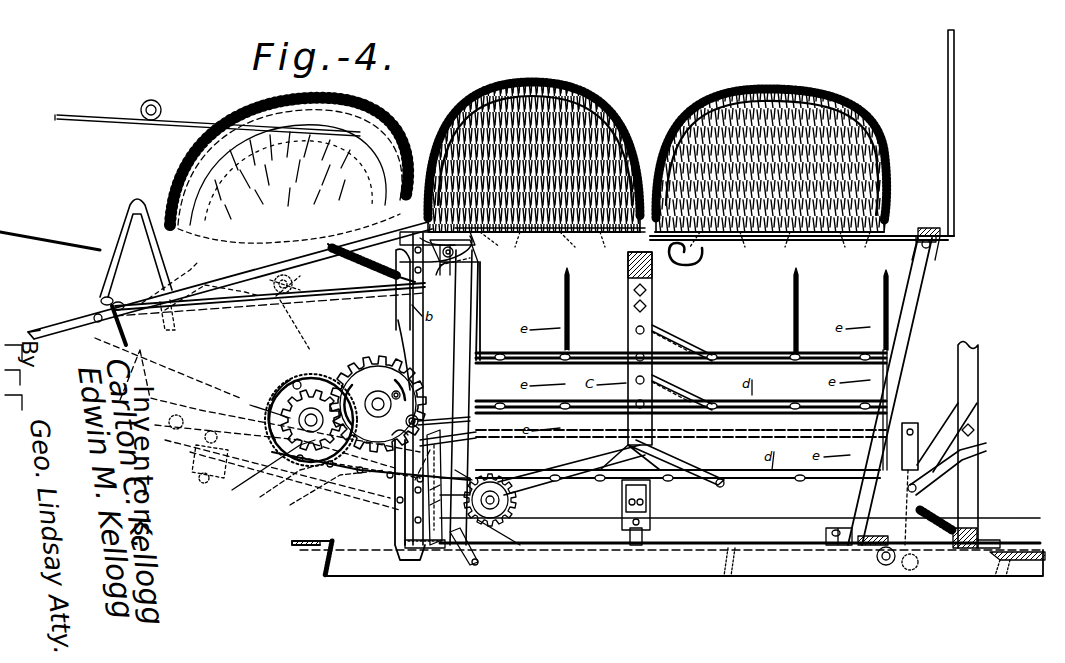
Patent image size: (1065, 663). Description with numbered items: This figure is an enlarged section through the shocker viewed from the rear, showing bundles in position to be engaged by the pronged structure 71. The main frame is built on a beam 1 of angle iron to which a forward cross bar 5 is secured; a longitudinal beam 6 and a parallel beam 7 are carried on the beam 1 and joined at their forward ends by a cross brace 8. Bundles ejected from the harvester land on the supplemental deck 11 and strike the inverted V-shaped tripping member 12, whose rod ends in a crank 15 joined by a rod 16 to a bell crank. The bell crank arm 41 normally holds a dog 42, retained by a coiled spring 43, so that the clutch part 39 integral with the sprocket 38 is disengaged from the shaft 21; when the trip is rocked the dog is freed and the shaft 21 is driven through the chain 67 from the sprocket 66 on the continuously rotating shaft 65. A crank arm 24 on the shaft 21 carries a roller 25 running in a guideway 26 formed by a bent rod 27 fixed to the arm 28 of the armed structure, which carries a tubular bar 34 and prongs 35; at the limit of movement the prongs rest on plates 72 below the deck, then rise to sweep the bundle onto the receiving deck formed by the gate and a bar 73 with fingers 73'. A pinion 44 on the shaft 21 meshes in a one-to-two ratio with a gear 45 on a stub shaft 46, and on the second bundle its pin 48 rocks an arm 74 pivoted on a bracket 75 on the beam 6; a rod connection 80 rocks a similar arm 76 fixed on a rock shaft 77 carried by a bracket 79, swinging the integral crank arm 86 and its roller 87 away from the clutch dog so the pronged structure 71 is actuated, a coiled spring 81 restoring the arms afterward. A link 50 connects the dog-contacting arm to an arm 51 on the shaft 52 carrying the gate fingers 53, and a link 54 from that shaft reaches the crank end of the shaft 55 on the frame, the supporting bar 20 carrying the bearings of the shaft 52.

The beam 1 is at (622, 568).
The forward cross bar 5 is at (986, 576).
The longitudinal beam 6 is at (395, 545).
The beam 7 is at (845, 548).
The cross brace 8 is at (730, 528).
The supplemental deck 11 is at (55, 328).
The tripping member 12 is at (125, 200).
The crank 15 is at (98, 300).
The rod 16 is at (222, 306).
The bar 20 is at (470, 242).
The shaft 21 is at (280, 413).
The crank arm 24 is at (260, 497).
The roller 25 is at (290, 505).
The guideway 26 is at (213, 461).
The rod 27 is at (200, 485).
The arm 28 is at (285, 322).
The tubular bar 34 is at (395, 283).
The prongs 35 is at (420, 230).
The sprocket 38 is at (280, 395).
The clutch part 39 is at (282, 422).
The arm 41 is at (345, 375).
The dog 42 is at (297, 380).
The coiled spring 43 is at (372, 262).
The pinion 44 is at (270, 432).
The gear 45 is at (360, 372).
The stub shaft 46 is at (420, 395).
The pin 48 is at (530, 426).
The link 50 is at (478, 300).
The arm 51 is at (470, 255).
The shaft 52 is at (445, 265).
The fingers 53 is at (532, 240).
The link 54 is at (478, 322).
The shaft 55 is at (470, 560).
The shaft 65 is at (516, 498).
The sprocket 66 is at (520, 508).
The chain 67 is at (232, 490).
The pronged structure 71 is at (652, 310).
The plates 72 is at (105, 340).
The bar 73 is at (816, 141).
The fingers 73' is at (920, 227).
The arm 74 is at (433, 440).
The bracket 75 is at (418, 548).
The arm 76 is at (922, 425).
The rock shaft 77 is at (975, 478).
The bracket 79 is at (978, 438).
The rod connection 80 is at (735, 436).
The coiled spring 81 is at (950, 520).
The crank arm 86 is at (898, 521).
The roller 87 is at (885, 565).